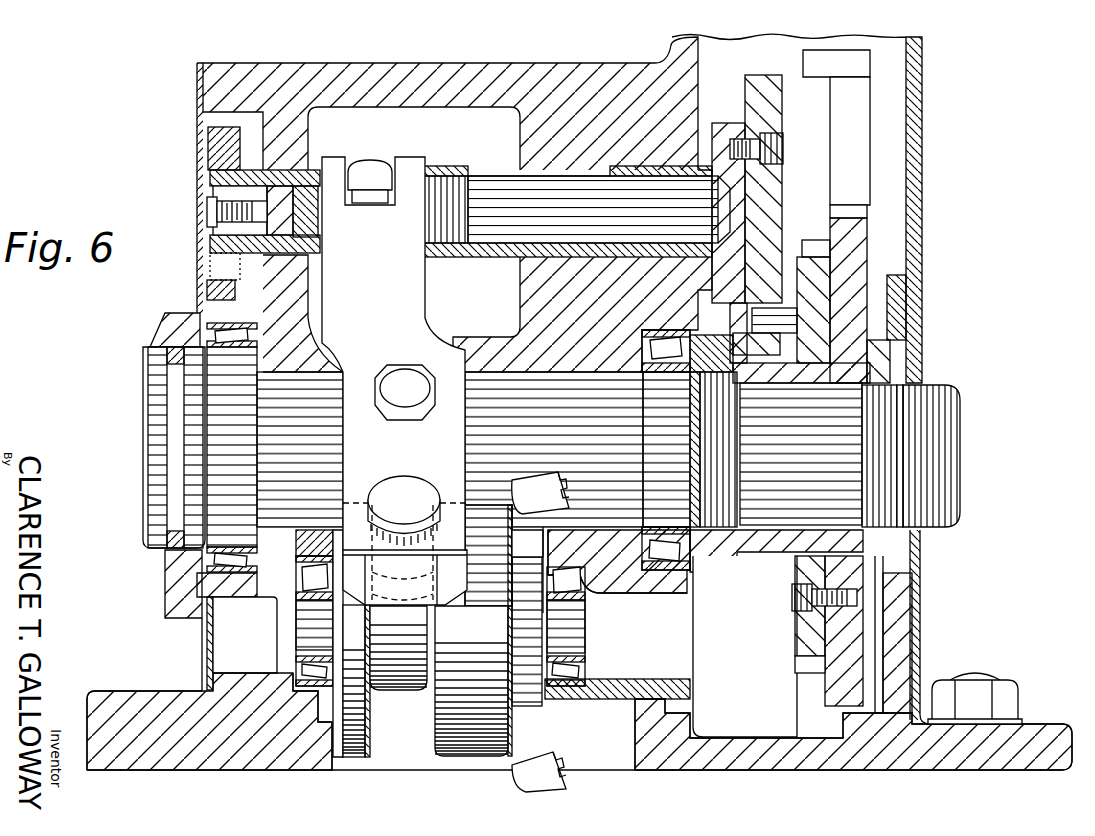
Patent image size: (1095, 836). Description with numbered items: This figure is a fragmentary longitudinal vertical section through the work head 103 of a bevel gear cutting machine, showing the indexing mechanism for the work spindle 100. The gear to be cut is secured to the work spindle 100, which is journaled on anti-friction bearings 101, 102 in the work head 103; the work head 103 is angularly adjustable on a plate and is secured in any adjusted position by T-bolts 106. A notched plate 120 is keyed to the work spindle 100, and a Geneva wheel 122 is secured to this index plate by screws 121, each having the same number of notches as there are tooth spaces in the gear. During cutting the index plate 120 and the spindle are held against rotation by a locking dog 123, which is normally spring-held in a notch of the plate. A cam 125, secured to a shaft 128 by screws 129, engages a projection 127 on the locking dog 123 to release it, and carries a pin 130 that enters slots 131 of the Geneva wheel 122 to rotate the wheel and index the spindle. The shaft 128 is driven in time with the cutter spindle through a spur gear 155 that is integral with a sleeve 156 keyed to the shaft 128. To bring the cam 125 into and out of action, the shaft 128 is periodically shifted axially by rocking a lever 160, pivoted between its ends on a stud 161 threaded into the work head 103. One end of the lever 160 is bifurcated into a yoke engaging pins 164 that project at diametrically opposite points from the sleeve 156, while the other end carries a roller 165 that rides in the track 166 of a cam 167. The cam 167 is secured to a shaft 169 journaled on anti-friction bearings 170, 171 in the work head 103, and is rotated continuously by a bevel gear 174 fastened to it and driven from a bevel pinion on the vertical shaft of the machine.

The work spindle 100 is at (771, 503).
The anti-friction bearing 101 is at (230, 586).
The anti-friction bearing 102 is at (660, 566).
The work head 103 is at (556, 74).
The T-bolt 106 is at (977, 676).
The notched plate 120 is at (858, 263).
The screw 121 is at (790, 606).
The Geneva wheel 122 is at (813, 676).
The locking dog 123 is at (860, 163).
The cam 125 is at (776, 194).
The projection 127 is at (818, 78).
The shaft 128 is at (491, 256).
The screw 129 is at (783, 147).
The pin 130 is at (788, 300).
The slot 131 is at (797, 664).
The spur gear 155 is at (228, 152).
The sleeve 156 is at (305, 172).
The lever 160 is at (410, 322).
The stud 161 is at (405, 397).
The pin 164 is at (370, 182).
The roller 165 is at (413, 500).
The track 166 is at (400, 735).
The cam 167 is at (476, 740).
The shaft 169 is at (576, 632).
The anti-friction bearing 170 is at (290, 602).
The anti-friction bearing 171 is at (567, 700).
The bevel gear 174 is at (563, 765).